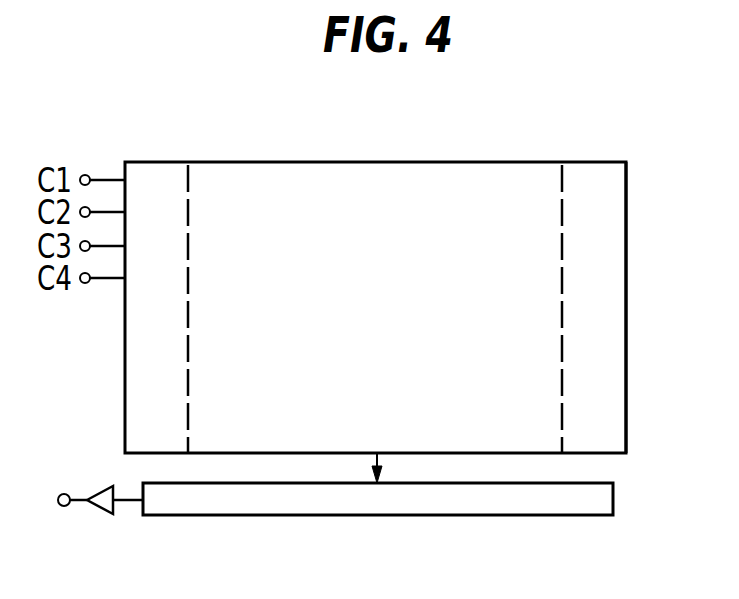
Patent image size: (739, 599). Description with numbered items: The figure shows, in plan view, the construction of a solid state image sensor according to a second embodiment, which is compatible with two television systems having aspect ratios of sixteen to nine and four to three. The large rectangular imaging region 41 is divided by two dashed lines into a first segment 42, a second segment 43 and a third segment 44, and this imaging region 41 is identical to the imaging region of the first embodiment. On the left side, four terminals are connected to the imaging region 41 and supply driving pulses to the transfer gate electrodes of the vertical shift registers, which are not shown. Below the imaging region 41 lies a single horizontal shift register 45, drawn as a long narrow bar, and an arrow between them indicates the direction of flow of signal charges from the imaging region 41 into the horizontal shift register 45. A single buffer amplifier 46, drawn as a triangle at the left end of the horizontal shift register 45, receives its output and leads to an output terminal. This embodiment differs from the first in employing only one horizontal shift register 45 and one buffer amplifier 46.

The imaging region 41 is at (325, 161).
The first segment 42 is at (485, 177).
The second segment 43 is at (158, 177).
The third segment 44 is at (599, 177).
The horizontal shift register 45 is at (580, 497).
The buffer amplifier 46 is at (98, 516).